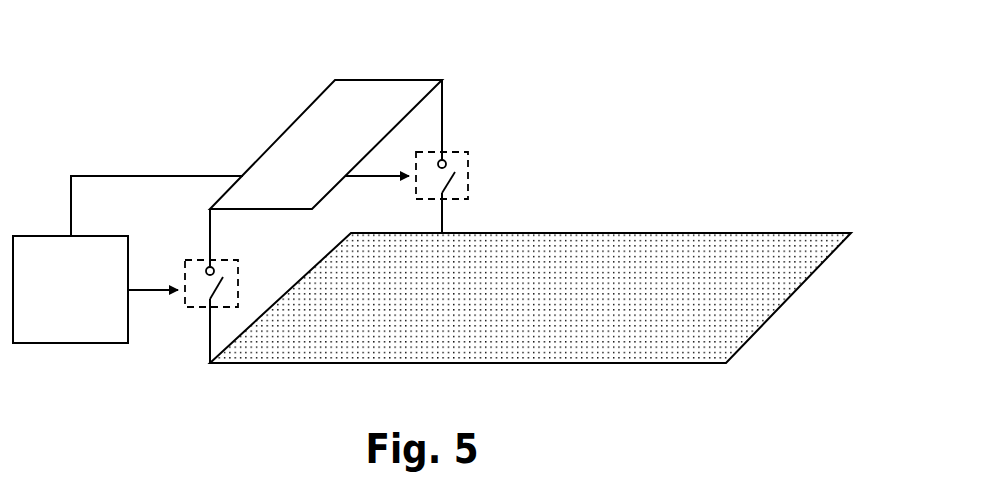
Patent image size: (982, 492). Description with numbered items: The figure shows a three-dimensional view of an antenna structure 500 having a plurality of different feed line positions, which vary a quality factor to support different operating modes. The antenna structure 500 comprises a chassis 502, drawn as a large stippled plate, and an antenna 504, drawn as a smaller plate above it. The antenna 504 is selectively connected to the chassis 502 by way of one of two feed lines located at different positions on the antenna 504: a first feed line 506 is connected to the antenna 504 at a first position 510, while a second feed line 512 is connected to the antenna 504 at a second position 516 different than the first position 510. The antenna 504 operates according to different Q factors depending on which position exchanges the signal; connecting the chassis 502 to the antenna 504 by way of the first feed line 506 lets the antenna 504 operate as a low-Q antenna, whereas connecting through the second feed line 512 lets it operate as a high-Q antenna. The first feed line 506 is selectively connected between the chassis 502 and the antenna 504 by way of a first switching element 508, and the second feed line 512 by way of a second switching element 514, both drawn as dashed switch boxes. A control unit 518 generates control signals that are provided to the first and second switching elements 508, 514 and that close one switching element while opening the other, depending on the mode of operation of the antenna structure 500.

The antenna structure 500 is at (58, 40).
The chassis 502 is at (816, 232).
The antenna 504 is at (386, 79).
The first feed line 506 is at (444, 222).
The first switching element 508 is at (467, 152).
The first position 510 is at (446, 75).
The second feed line 512 is at (208, 340).
The second switching element 514 is at (236, 259).
The second position 516 is at (204, 203).
The control unit 518 is at (98, 271).